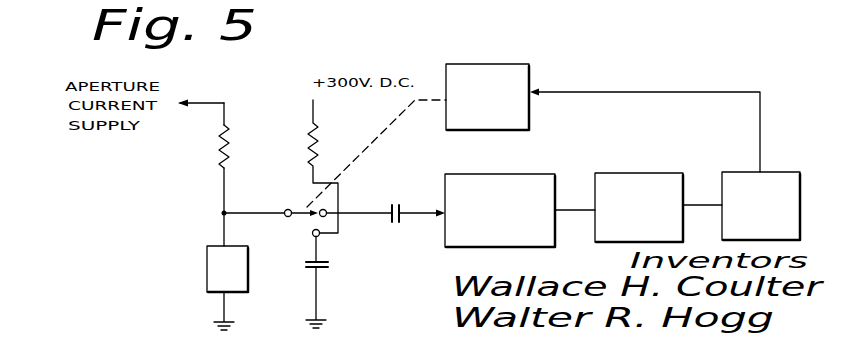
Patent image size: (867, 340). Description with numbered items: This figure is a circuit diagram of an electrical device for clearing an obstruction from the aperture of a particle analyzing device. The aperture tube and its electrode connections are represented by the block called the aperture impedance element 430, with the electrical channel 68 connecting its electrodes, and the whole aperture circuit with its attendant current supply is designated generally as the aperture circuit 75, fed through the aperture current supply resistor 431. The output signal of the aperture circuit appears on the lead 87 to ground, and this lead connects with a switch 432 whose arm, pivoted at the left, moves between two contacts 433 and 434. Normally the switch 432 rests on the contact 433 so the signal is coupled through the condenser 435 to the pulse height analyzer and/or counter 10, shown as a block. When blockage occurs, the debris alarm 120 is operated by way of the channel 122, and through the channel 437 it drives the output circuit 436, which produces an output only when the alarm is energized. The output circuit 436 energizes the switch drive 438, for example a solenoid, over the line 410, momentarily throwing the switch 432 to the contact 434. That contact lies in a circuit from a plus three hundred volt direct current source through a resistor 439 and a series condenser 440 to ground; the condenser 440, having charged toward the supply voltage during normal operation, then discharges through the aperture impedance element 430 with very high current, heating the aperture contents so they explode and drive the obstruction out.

The aperture circuit 75 is at (161, 177).
The electrical channel 68 is at (222, 228).
The aperture impedance element 430 is at (207, 273).
The aperture current supply resistor 431 is at (219, 148).
The resistor 439 is at (310, 130).
The lead 87 is at (250, 214).
The switch 432 is at (310, 194).
The contact 433 is at (328, 207).
The contact 434 is at (319, 237).
The condenser 435 is at (398, 200).
The series condenser 440 is at (330, 267).
The switch drive 438 is at (530, 76).
The feedback line 410 is at (658, 92).
The pulse height analyzer and/or counter 10 is at (525, 166).
The channel 122 is at (567, 208).
The debris alarm 120 is at (649, 173).
The channel 437 is at (700, 203).
The output circuit 436 is at (820, 152).